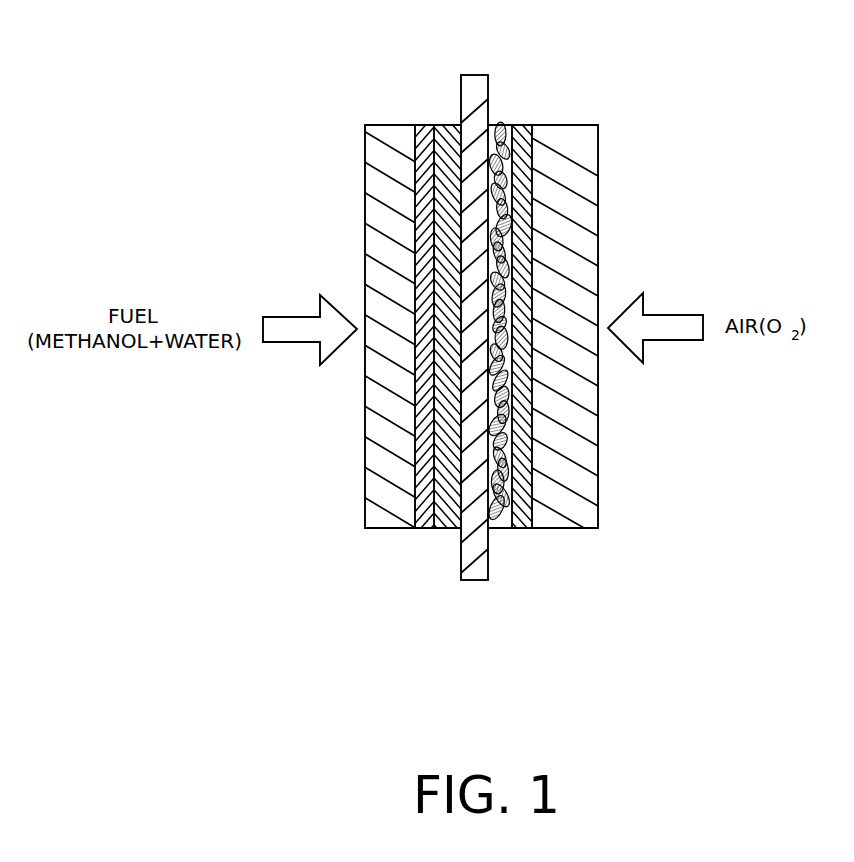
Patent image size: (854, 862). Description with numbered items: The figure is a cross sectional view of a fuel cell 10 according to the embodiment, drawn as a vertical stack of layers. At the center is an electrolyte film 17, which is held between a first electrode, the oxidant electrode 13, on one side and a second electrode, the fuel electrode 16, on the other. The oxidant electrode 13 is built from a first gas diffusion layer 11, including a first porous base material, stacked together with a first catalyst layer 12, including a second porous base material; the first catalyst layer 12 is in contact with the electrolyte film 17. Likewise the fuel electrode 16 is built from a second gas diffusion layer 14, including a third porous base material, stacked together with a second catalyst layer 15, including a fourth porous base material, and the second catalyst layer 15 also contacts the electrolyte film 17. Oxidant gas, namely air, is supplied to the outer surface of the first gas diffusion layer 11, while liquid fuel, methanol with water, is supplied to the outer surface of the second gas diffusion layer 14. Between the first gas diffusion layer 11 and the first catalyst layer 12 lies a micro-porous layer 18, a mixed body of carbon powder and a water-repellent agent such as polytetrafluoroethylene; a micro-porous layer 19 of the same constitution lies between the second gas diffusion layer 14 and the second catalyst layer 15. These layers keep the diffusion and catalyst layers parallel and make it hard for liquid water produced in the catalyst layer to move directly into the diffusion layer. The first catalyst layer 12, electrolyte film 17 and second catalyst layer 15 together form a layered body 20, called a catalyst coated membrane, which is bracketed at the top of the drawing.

The fuel cell 10 is at (599, 100).
The first gas diffusion layer 11 is at (577, 528).
The first catalyst layer 12 is at (500, 528).
The oxidant electrode 13 is at (500, 618).
The second gas diffusion layer 14 is at (382, 528).
The second catalyst layer 15 is at (448, 528).
The fuel electrode 16 is at (333, 618).
The electrolyte film 17 is at (477, 581).
The micro-porous layer 18 is at (530, 528).
The micro-porous layer 19 is at (428, 528).
The layered body 20 is at (513, 125).